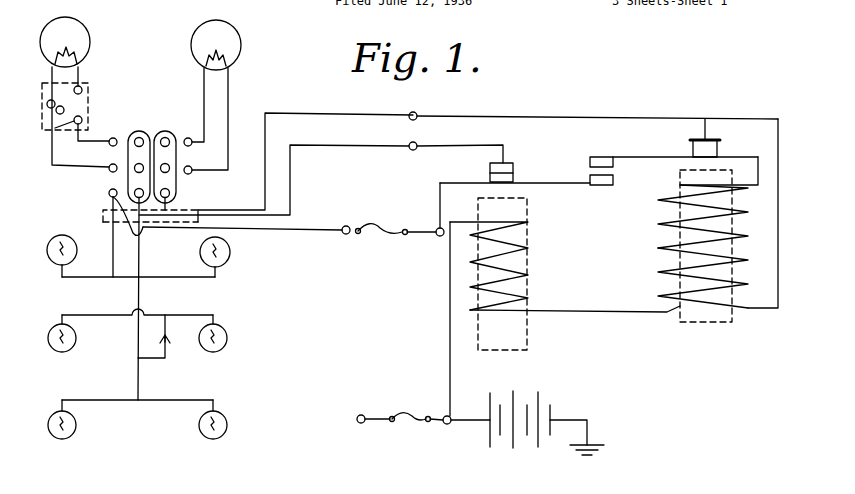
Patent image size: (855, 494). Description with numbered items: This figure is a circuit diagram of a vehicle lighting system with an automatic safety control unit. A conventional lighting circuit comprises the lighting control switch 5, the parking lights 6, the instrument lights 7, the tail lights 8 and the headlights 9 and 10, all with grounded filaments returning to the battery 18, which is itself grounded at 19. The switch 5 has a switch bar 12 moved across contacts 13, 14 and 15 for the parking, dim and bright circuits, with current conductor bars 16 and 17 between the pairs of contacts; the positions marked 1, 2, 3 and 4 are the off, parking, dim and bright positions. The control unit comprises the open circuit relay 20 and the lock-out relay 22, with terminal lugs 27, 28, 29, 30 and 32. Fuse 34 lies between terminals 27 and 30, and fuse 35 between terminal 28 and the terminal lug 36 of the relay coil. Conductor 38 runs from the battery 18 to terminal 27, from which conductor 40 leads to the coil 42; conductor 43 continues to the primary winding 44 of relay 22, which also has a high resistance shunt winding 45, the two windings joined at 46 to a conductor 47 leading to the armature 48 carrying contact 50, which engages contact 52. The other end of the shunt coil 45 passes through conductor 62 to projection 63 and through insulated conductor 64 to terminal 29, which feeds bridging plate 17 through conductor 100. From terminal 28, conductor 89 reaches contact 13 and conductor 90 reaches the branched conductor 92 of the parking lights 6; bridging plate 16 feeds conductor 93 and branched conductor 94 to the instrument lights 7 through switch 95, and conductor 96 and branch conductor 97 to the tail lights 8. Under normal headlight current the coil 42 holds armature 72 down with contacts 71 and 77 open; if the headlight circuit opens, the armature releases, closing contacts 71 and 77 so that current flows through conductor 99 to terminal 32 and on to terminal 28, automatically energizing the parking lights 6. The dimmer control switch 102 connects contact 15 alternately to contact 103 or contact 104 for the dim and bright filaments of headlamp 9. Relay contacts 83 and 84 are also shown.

The off position 1 is at (141, 218).
The parking position 2 is at (116, 209).
The dim position 3 is at (103, 168).
The bright position 4 is at (104, 143).
The lighting control switch 5 is at (180, 187).
The parking lights 6 is at (50, 262).
The instrument lights 7 is at (53, 353).
The tail lights 8 is at (53, 442).
The headlight 9 is at (84, 47).
The headlight 10 is at (200, 34).
The switch bar 12 is at (107, 225).
The contact 13 is at (106, 191).
The contact 14 is at (193, 167).
The contact 15 is at (113, 137).
The current conductor bar 16 is at (142, 133).
The current conductor bar 17 is at (163, 130).
The battery 18 is at (522, 445).
The ground 19 is at (587, 428).
The open circuit relay 20 is at (527, 335).
The lock-out relay 22 is at (710, 327).
The terminal lug 27 is at (443, 425).
The terminal lug 28 is at (346, 235).
The terminal lug 29 is at (418, 113).
The terminal lug 30 is at (360, 425).
The terminal lug 32 is at (413, 152).
The fuse 34 is at (407, 427).
The fuse 35 is at (375, 236).
The terminal lug 36 is at (438, 237).
The conductor 38 is at (473, 425).
The conductor 40 is at (448, 345).
The coil 42 is at (525, 250).
The conductor 43 is at (617, 314).
The primary winding 44 is at (660, 260).
The shunt winding 45 is at (733, 260).
The common connection 46 is at (755, 185).
The conductor 47 is at (758, 168).
The armature 48 is at (653, 138).
The contact 50 is at (713, 152).
The contact 52 is at (700, 141).
The conductor 62 is at (763, 310).
The integral projection 63 is at (706, 120).
The insulated conductor 64 is at (630, 118).
The contact 71 is at (512, 180).
The armature 72 is at (547, 185).
The contact 77 is at (490, 167).
The contact 83 is at (586, 157).
The contact 84 is at (613, 177).
The conductor 89 is at (265, 229).
The conductor 90 is at (114, 264).
The branched conductor 92 is at (85, 283).
The conductor 93 is at (137, 295).
The branched conductor 94 is at (158, 315).
The switch 95 is at (173, 340).
The conductor 96 is at (137, 373).
The branch conductor 97 is at (128, 400).
The conductor 99 is at (290, 193).
The conductor 100 is at (315, 113).
The dimmer control switch 102 is at (55, 128).
The contact 103 is at (47, 103).
The contact 104 is at (81, 88).